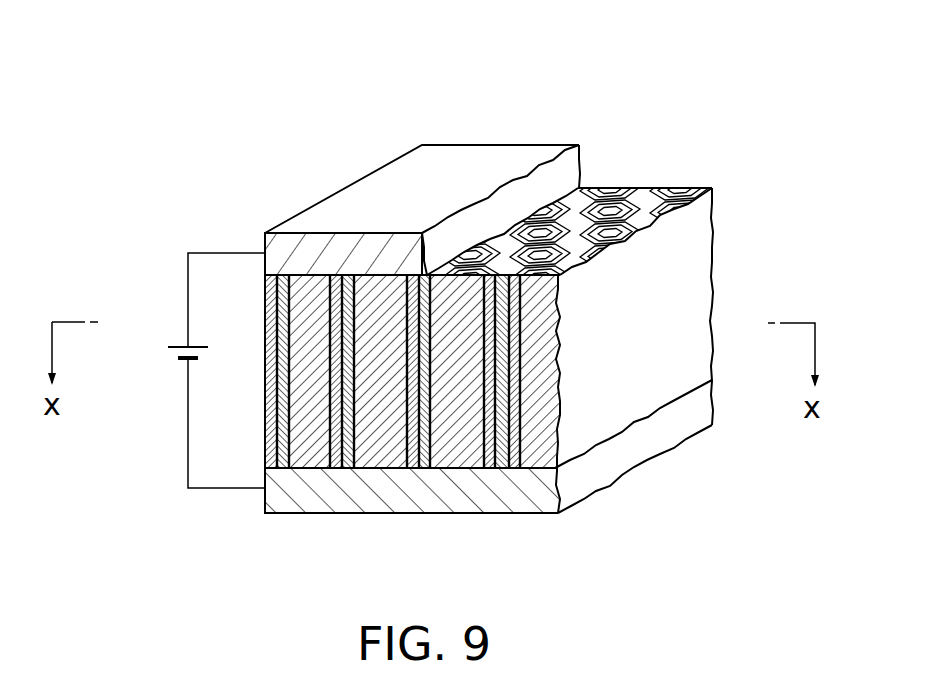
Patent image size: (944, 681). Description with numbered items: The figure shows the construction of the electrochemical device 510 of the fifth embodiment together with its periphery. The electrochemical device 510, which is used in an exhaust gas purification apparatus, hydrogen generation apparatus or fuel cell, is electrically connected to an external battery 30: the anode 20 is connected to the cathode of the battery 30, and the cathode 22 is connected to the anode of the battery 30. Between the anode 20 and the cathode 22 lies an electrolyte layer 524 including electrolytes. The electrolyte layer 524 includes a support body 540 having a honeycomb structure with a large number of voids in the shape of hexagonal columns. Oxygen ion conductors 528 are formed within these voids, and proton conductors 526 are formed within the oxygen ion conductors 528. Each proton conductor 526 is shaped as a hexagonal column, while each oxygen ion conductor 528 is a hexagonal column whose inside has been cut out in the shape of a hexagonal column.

The electrochemical device 510 is at (477, 296).
The anode 20 is at (450, 172).
The cathode 22 is at (453, 495).
The battery 30 is at (180, 347).
The electrolyte layer 524 is at (453, 283).
The proton conductor 526 is at (295, 293).
The oxygen ion conductor 528 is at (330, 293).
The support body 540 is at (350, 293).